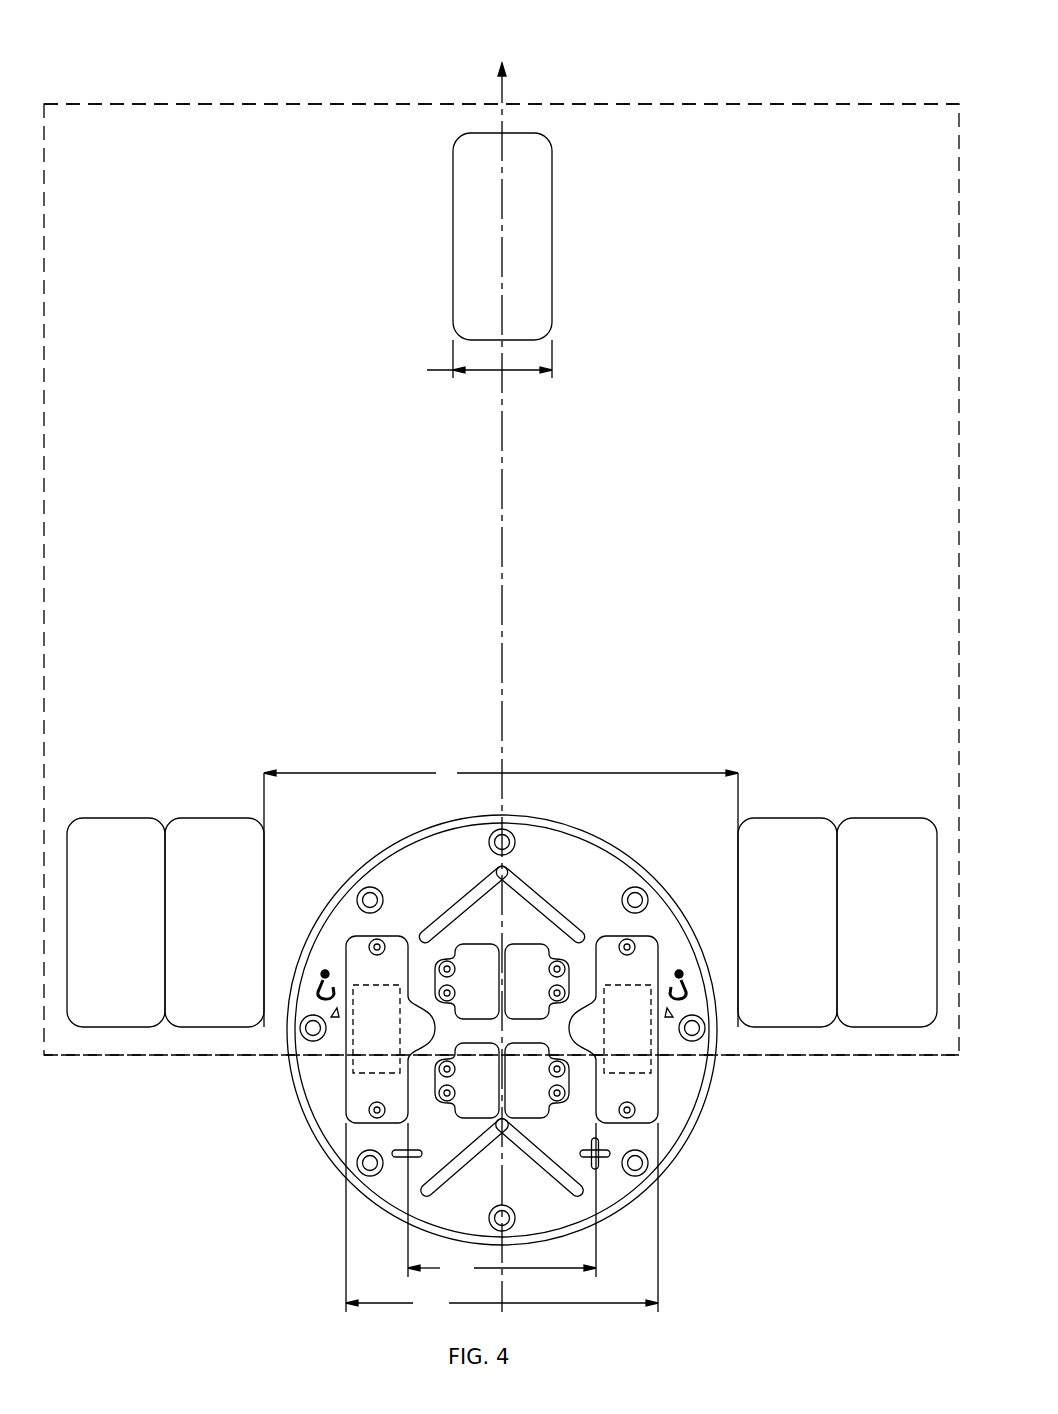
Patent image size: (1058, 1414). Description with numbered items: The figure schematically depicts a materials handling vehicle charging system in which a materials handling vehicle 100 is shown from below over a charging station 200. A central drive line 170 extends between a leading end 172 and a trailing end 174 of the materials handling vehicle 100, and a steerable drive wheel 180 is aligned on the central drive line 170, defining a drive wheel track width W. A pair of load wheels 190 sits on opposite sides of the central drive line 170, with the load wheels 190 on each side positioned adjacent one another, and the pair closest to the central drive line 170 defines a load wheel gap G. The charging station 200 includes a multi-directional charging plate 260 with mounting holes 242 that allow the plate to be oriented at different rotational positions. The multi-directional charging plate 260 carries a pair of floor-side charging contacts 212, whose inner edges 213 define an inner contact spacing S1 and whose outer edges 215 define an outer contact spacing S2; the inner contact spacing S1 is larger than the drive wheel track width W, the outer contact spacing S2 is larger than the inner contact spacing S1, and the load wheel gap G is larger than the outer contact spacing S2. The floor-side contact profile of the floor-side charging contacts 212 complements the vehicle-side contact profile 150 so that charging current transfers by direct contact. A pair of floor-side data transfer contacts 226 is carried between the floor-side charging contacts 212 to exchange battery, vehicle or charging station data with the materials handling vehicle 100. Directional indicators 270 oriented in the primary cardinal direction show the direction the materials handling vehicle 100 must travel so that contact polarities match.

The materials handling vehicle 100 is at (840, 98).
The leading end 172 is at (155, 103).
The trailing end 174 is at (158, 1055).
The central drive line 170 is at (505, 487).
The steerable drive wheel 180 is at (452, 240).
The drive wheel track width W is at (476, 361).
The load wheels 190 is at (120, 818).
The load wheel gap G is at (501, 894).
The charging station 200 is at (640, 810).
The multi-directional charging plate 260 is at (415, 848).
The mounting holes 242 is at (510, 834).
The directional indicator 270 is at (565, 912).
The floor-side data transfer contacts 226 is at (462, 942).
The inner edge 213 is at (410, 1094).
The floor-side charging contacts 212 is at (346, 1064).
The outer edge 215 is at (346, 1098).
The vehicle-side contact profile 150 is at (362, 975).
The inner contact spacing S1 is at (502, 1269).
The outer contact spacing S2 is at (502, 1304).